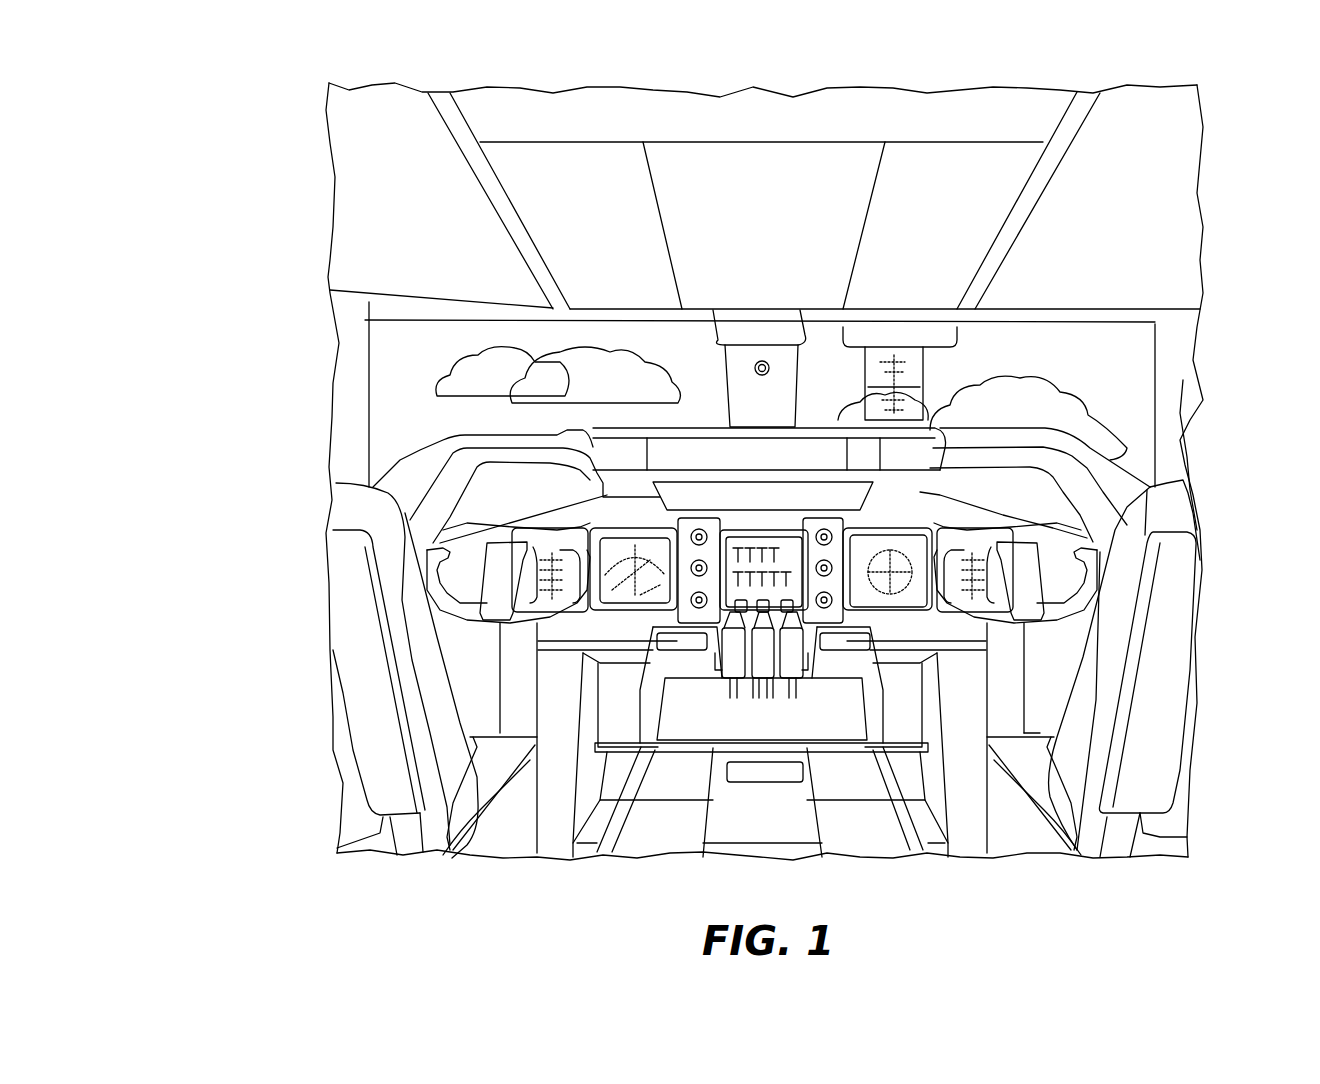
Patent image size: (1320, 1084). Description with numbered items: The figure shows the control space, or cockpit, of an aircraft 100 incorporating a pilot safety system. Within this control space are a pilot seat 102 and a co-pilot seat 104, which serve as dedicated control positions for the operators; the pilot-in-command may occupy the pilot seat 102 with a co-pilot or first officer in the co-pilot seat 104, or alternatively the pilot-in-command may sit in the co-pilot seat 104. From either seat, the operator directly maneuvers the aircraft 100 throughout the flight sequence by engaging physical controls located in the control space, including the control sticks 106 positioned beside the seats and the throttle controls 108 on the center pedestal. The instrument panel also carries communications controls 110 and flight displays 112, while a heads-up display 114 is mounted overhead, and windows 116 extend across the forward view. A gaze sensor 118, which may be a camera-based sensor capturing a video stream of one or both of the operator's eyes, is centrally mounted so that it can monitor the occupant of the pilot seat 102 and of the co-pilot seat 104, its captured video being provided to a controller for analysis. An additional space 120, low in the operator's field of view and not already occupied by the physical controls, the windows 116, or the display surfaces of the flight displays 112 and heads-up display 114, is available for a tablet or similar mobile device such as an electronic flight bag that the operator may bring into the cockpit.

The aircraft 100 is at (200, 90).
The pilot seat 102 is at (438, 738).
The co-pilot seat 104 is at (1122, 775).
The control sticks 106 is at (503, 583).
The throttle controls 108 is at (788, 652).
The communications controls 110 is at (783, 555).
The flight displays 112 is at (638, 570).
The heads-up display 114 is at (917, 367).
The windows 116 is at (442, 403).
The gaze sensor 118 is at (769, 364).
The additional space 120 is at (1038, 715).